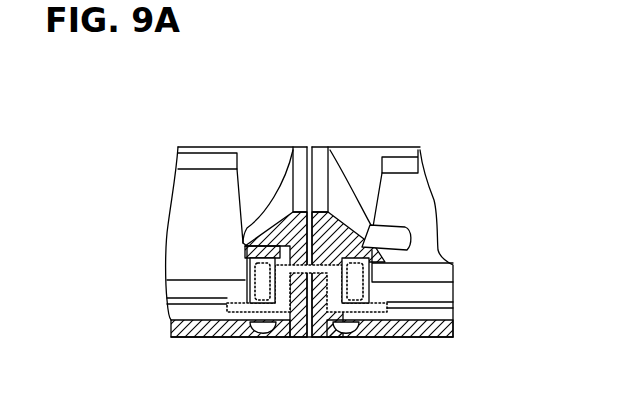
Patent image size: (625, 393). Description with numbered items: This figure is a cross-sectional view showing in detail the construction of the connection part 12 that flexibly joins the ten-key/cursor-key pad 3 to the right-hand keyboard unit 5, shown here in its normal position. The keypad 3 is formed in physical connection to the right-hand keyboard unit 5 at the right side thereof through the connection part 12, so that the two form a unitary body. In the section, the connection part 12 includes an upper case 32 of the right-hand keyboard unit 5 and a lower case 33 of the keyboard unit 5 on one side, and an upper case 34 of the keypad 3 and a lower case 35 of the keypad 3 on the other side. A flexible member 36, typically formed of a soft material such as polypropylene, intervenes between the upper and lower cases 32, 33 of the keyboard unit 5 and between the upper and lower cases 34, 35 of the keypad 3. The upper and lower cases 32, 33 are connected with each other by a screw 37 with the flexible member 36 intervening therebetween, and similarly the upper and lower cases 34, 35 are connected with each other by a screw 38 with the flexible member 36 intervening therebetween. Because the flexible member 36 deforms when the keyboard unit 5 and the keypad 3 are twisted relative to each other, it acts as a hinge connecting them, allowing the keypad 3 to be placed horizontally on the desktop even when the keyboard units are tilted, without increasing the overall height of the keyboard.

The connection part 12 is at (321, 138).
The right-hand keyboard unit 5 is at (170, 176).
The ten-key/cursor-key pad 3 is at (428, 163).
The upper case of the keypad 34 is at (387, 250).
The upper case of the right-hand keyboard unit 32 is at (245, 254).
The flexible member 36 is at (340, 292).
The lower case of the keyboard unit 33 is at (190, 338).
The lower case of the keypad 35 is at (430, 338).
The screw 37 is at (263, 338).
The screw 38 is at (341, 338).